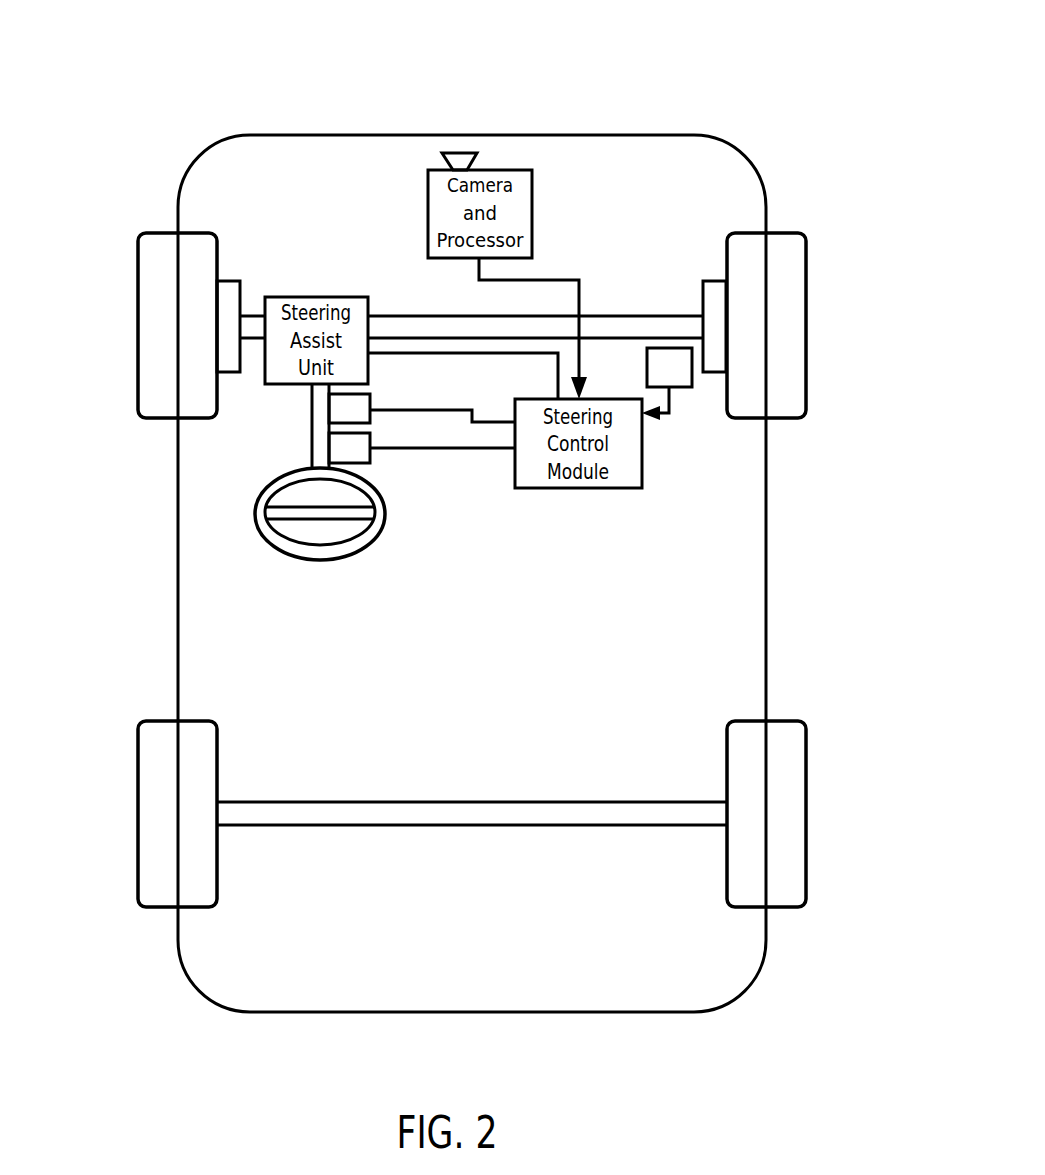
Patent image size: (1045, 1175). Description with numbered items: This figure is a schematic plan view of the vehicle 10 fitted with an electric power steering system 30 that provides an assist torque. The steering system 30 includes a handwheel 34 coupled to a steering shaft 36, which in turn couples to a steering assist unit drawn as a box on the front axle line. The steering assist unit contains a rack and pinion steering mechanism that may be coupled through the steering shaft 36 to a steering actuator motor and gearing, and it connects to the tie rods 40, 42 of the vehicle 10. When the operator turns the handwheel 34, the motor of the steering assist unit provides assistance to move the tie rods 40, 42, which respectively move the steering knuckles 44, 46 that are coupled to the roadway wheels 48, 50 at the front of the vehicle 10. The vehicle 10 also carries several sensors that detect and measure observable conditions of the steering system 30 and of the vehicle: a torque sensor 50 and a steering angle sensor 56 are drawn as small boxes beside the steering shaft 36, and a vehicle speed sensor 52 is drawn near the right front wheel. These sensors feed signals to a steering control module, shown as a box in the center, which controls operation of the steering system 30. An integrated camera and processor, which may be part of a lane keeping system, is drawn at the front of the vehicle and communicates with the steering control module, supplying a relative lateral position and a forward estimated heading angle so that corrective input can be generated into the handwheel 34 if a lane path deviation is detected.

The vehicle 10 is at (738, 104).
The steering system 30 is at (330, 482).
The handwheel 34 is at (383, 530).
The steering shaft 36 is at (309, 465).
The tie rod 40 is at (398, 314).
The tie rod 42 is at (246, 314).
The steering knuckle 44 is at (718, 280).
The steering knuckle 46 is at (224, 279).
The roadway wheel 48 is at (806, 328).
The roadway wheel / torque sensor 50 is at (138, 327).
The vehicle speed sensor 52 is at (688, 388).
The steering angle sensor 56 is at (370, 457).